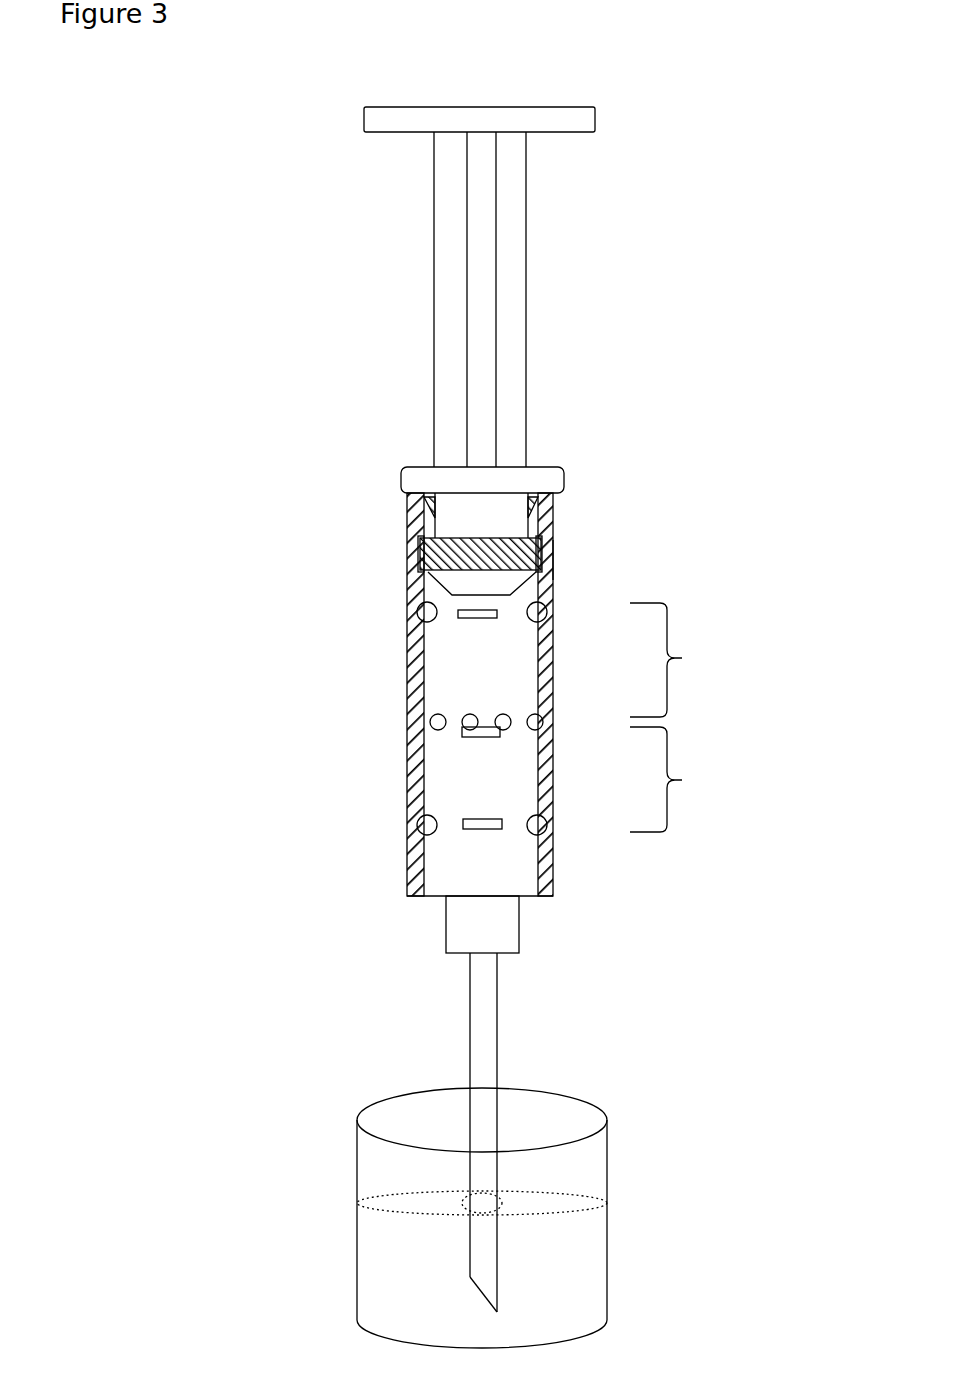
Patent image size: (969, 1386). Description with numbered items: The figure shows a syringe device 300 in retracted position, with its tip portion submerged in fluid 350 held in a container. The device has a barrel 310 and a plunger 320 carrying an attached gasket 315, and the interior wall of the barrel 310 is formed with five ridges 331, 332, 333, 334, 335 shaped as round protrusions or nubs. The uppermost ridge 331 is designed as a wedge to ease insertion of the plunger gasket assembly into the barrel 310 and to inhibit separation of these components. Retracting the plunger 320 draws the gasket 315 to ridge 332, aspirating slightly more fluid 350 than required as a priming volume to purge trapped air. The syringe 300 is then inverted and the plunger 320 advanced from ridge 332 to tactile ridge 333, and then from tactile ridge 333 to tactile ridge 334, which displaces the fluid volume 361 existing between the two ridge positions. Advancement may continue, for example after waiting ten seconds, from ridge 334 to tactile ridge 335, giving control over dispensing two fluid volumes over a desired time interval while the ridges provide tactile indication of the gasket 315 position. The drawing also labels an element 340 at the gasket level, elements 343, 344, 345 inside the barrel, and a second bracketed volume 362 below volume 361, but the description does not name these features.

The syringe device 300 is at (412, 481).
The barrel 310 is at (407, 875).
The gasket 315 is at (504, 532).
The plunger 320 is at (532, 322).
The uppermost ridge 331 is at (416, 515).
The ridge 332 is at (416, 560).
The tactile ridge 333 is at (420, 612).
The tactile ridge 334 is at (430, 719).
The tactile ridge 335 is at (420, 824).
The filter 340 is at (559, 560).
The first partition 343 is at (493, 622).
The second partition 344 is at (501, 740).
The third partition 345 is at (496, 834).
The fluid 350 is at (392, 1205).
The fluid volume 361 is at (682, 658).
The second chamber 362 is at (682, 780).